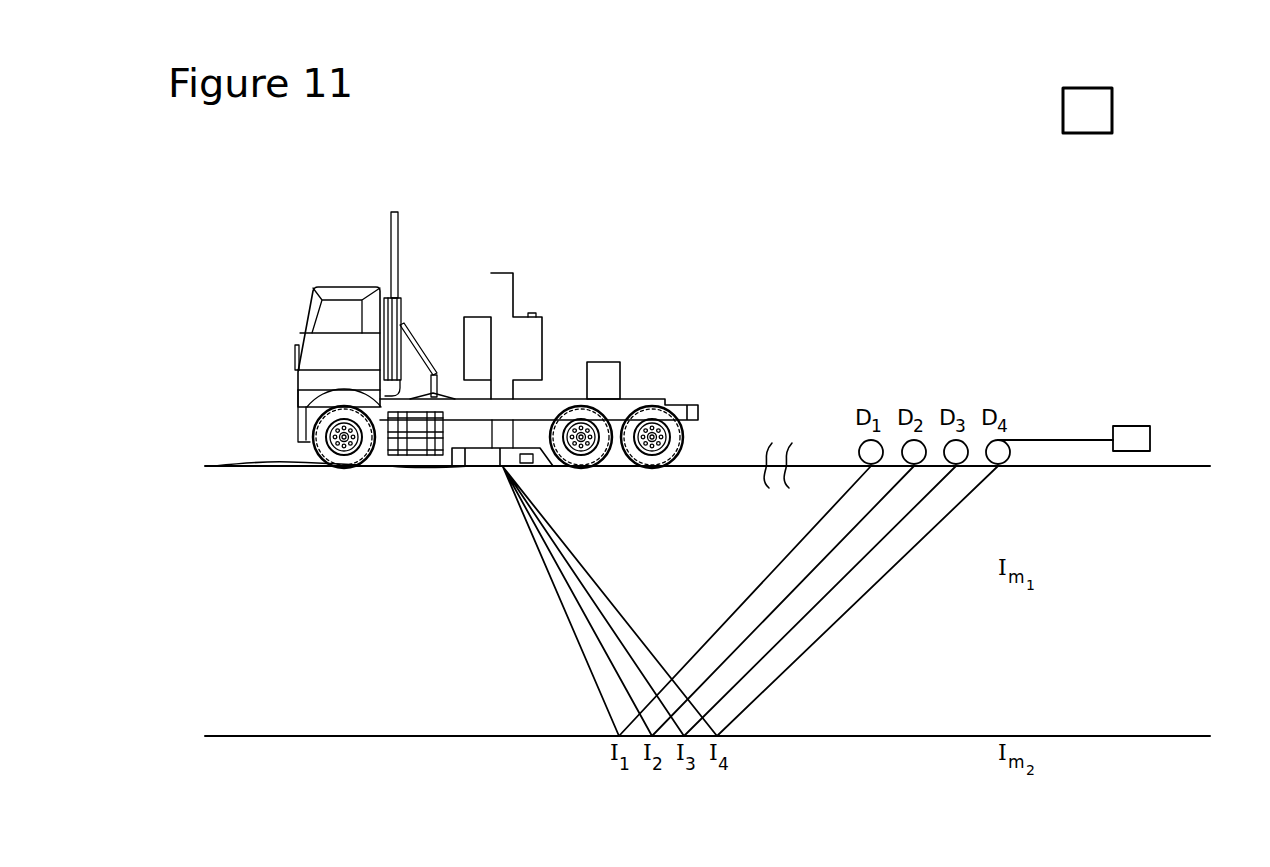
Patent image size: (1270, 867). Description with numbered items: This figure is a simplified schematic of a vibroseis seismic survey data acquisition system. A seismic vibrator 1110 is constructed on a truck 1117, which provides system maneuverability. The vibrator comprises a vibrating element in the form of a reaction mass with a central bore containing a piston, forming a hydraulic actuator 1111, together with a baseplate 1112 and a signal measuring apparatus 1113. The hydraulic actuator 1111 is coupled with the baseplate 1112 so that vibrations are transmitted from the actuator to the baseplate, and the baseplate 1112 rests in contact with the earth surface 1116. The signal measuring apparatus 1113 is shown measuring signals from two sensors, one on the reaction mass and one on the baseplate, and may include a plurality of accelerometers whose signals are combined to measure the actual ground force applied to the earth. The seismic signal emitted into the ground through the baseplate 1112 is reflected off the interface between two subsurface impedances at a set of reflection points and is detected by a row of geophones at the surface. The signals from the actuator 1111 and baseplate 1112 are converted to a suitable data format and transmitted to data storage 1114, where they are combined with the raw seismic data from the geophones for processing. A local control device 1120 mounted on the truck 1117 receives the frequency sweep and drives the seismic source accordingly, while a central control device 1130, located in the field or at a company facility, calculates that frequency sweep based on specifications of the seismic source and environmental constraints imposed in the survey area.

The seismic vibrator 1110 is at (287, 306).
The hydraulic actuator 1111 is at (477, 315).
The baseplate 1112 is at (466, 470).
The signal measuring apparatus 1113 is at (528, 313).
The data storage 1114 is at (1135, 433).
The earth surface 1116 is at (272, 462).
The truck 1117 is at (345, 285).
The local control device 1120 is at (620, 373).
The central control device 1130 is at (1112, 115).